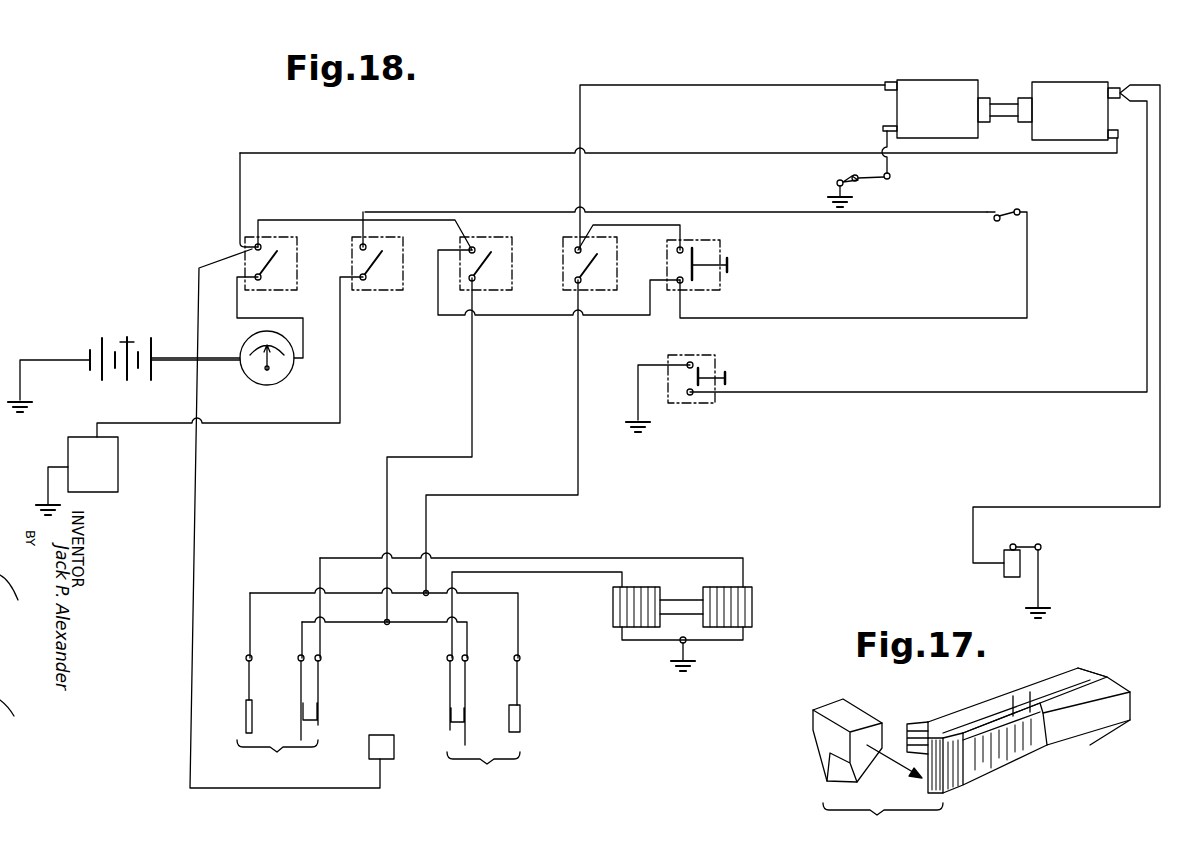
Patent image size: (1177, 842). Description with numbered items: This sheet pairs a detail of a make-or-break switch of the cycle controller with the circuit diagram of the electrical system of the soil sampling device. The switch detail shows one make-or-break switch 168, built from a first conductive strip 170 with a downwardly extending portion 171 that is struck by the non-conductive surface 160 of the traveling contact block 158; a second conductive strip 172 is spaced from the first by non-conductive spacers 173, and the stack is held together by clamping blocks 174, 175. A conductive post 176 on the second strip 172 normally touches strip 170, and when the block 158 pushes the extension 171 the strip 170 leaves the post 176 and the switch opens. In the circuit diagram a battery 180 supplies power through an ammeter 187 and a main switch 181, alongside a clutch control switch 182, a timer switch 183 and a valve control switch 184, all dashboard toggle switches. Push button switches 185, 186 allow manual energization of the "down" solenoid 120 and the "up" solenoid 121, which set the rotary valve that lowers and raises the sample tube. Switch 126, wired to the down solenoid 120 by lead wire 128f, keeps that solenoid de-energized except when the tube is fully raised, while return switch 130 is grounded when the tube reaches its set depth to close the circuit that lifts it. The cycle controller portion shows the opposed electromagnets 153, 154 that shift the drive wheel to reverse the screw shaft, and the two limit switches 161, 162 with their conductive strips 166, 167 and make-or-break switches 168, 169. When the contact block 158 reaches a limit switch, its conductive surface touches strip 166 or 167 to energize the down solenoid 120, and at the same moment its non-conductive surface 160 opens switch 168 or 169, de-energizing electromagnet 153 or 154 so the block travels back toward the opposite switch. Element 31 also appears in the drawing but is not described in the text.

In FIG. 18, the "down" solenoid 120 is at (938, 80).
In FIG. 18, the "up" solenoid 121 is at (1072, 84).
In FIG. 18, the switch 126 is at (830, 181).
In FIG. 18, the electrical lead wire 128f is at (895, 172).
In FIG. 18, the battery 180 is at (130, 336).
In FIG. 18, the main switch 181 is at (305, 298).
In FIG. 18, the clutch control switch 182 is at (410, 296).
In FIG. 18, the timer switch 183 is at (519, 296).
In FIG. 18, the valve control switch 184 is at (624, 296).
In FIG. 18, the push button switch 185 is at (720, 290).
In FIG. 18, the push button switch 186 is at (715, 357).
In FIG. 18, the ammeter 187 is at (258, 382).
In FIG. 18, the control unit 31 is at (118, 480).
In FIG. 18, the electromagnet 153 is at (613, 607).
In FIG. 18, the electromagnet 154 is at (752, 604).
In FIG. 18, the return switch 130 is at (1006, 572).
In FIG. 18, the contact block 158 is at (382, 735).
In FIG. 18, the limit switch 161 is at (483, 772).
In FIG. 18, the limit switch 162 is at (277, 761).
In FIG. 18, the conductive strip 166 is at (522, 718).
In FIG. 18, the conductive strip 167 is at (250, 708).
In FIG. 18, the make-or-break switch 168 is at (448, 728).
In FIG. 17, the make-or-break switch 168 is at (1086, 746).
In FIG. 18, the make-or-break switch 169 is at (338, 724).
In FIG. 17, the non-conductive surface 160 is at (855, 710).
In FIG. 17, the first conductive strip 170 is at (993, 745).
In FIG. 17, the downwardly extending portion 171 is at (953, 790).
In FIG. 17, the second conductive strip 172 is at (952, 714).
In FIG. 17, the non-conductive spacers 173 is at (1098, 684).
In FIG. 17, the clamping block 174 is at (1102, 723).
In FIG. 17, the clamping block 175 is at (1049, 680).
In FIG. 17, the conductive post 176 is at (927, 729).